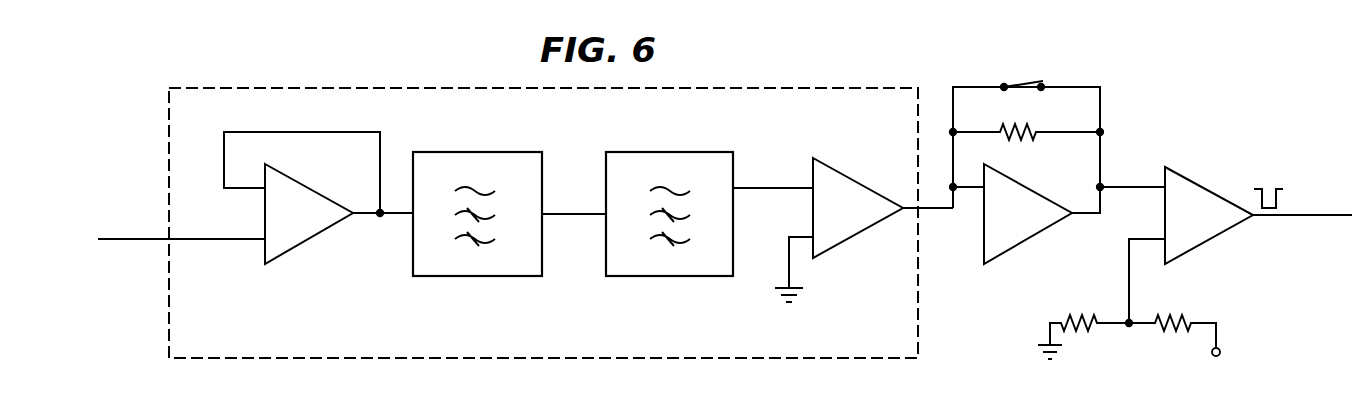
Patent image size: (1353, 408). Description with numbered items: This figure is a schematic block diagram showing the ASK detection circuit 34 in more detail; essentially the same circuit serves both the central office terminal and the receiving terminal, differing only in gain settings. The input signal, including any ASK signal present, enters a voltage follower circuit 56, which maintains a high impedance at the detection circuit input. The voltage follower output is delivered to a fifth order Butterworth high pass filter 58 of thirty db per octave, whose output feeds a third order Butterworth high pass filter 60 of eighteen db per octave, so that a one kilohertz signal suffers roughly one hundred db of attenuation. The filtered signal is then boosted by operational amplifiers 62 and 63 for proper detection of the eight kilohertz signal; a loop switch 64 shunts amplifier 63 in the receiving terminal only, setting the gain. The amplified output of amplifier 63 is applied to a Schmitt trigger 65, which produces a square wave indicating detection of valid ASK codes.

The ASK detection circuit 34 is at (324, 362).
The voltage follower circuit 56 is at (301, 195).
The fifth order Butterworth high pass filter 58 is at (538, 184).
The third order Butterworth high pass filter 60 is at (728, 184).
The operational amplifier 62 is at (852, 186).
The operational amplifier 63 is at (1018, 191).
The loop switch 64 is at (1034, 71).
The comparator 65 is at (1206, 193).